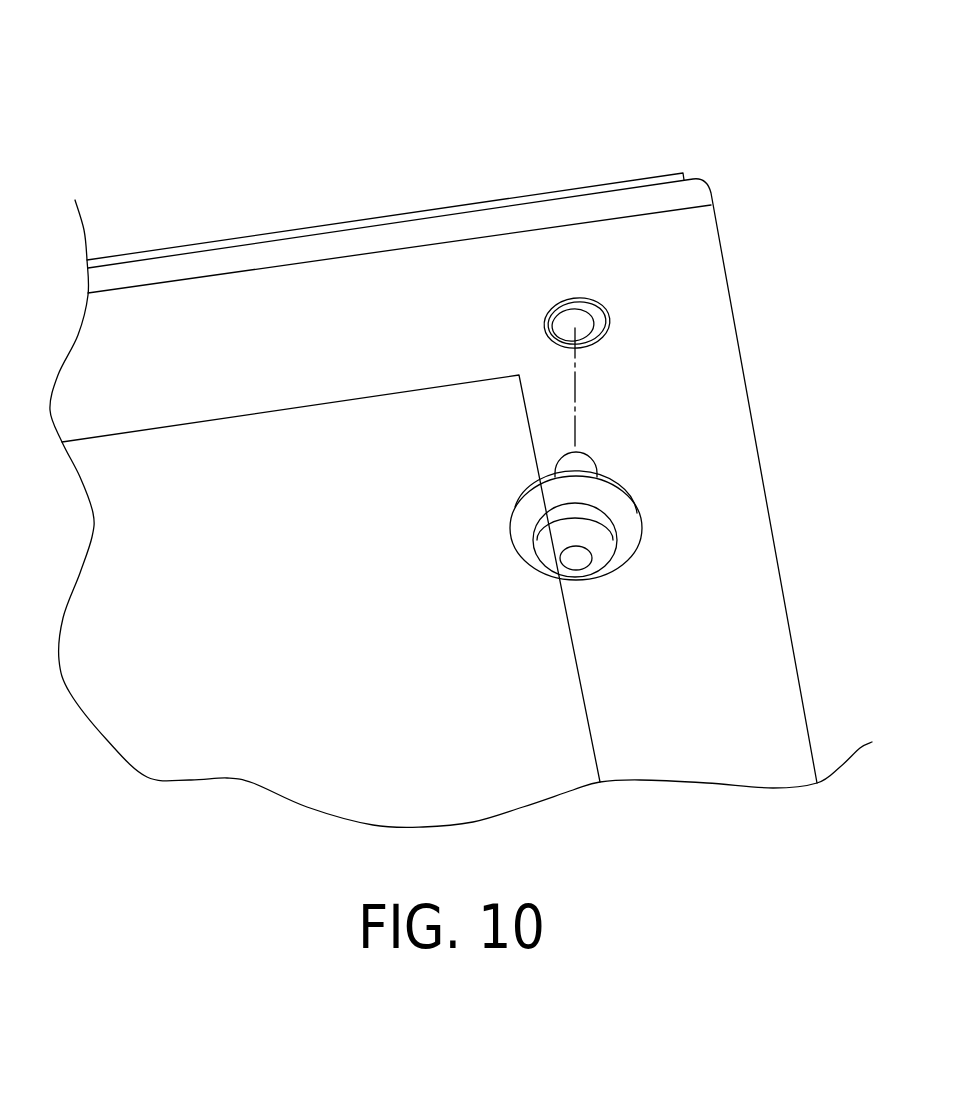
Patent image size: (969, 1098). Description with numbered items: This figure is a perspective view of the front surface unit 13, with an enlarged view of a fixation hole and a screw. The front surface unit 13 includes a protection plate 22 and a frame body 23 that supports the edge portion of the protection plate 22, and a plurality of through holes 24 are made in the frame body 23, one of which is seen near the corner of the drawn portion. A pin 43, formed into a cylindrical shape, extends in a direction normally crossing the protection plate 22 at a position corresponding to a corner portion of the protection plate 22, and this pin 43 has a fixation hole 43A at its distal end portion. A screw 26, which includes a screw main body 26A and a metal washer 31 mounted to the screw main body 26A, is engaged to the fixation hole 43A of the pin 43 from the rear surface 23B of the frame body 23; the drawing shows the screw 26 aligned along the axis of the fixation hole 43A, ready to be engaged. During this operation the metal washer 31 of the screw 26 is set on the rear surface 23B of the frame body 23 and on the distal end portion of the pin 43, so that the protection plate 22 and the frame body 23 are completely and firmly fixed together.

The front surface unit 13 is at (521, 140).
The protection plate 22 is at (362, 218).
The frame body 23 is at (736, 335).
The rear surface of the frame body 23B is at (258, 385).
The through hole 24 is at (604, 303).
The pin 43 is at (612, 325).
The fixation hole 43A is at (570, 326).
The metal washer 31 is at (525, 533).
The screw 26 is at (529, 592).
The screw main body 26A is at (617, 562).